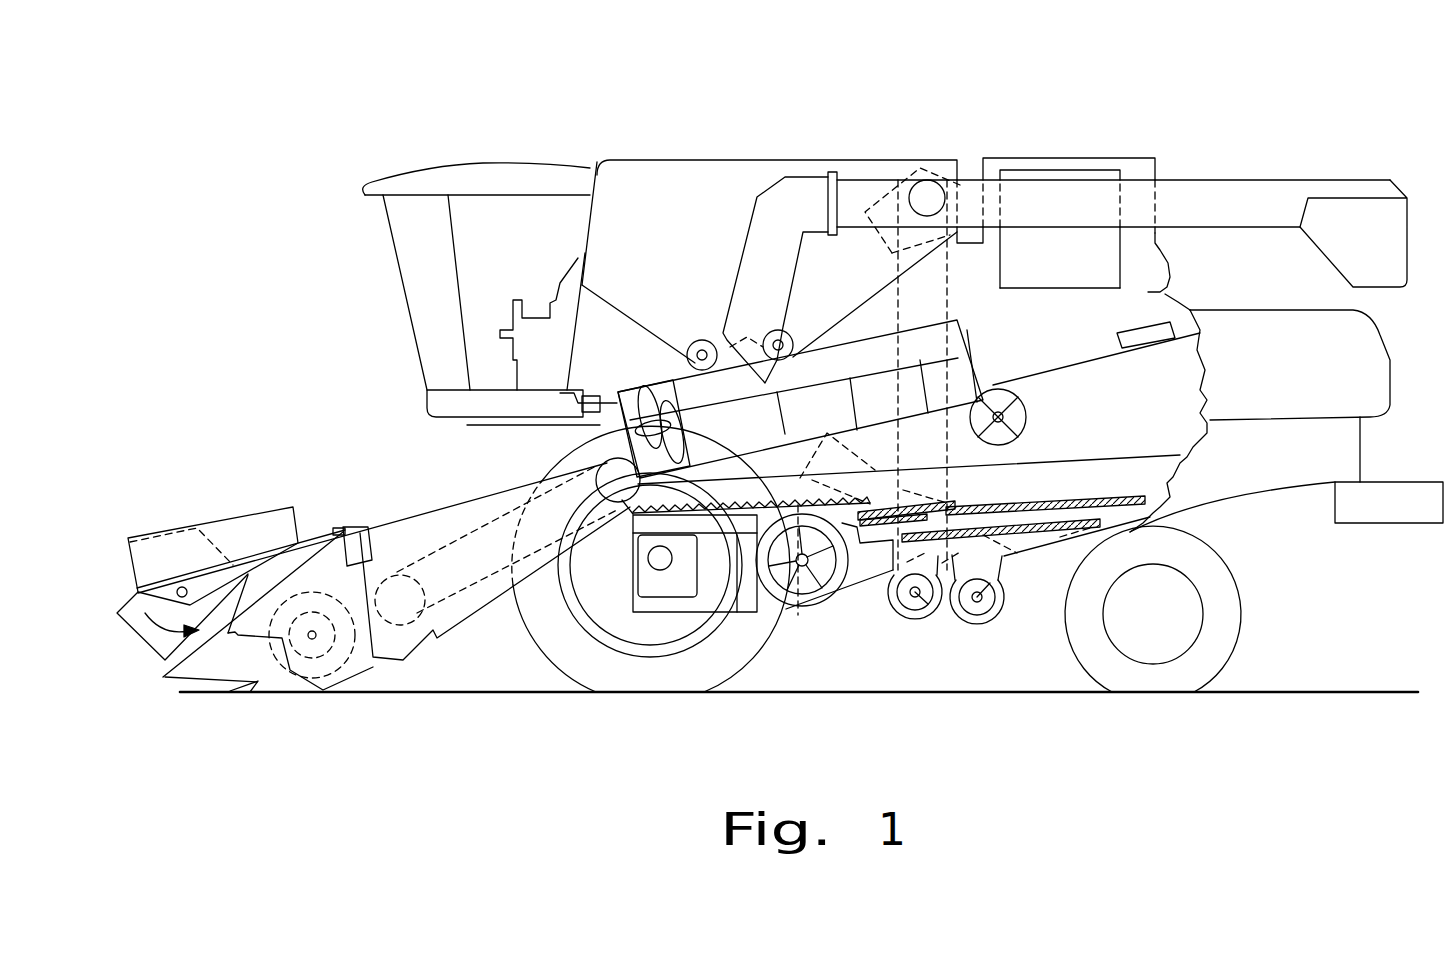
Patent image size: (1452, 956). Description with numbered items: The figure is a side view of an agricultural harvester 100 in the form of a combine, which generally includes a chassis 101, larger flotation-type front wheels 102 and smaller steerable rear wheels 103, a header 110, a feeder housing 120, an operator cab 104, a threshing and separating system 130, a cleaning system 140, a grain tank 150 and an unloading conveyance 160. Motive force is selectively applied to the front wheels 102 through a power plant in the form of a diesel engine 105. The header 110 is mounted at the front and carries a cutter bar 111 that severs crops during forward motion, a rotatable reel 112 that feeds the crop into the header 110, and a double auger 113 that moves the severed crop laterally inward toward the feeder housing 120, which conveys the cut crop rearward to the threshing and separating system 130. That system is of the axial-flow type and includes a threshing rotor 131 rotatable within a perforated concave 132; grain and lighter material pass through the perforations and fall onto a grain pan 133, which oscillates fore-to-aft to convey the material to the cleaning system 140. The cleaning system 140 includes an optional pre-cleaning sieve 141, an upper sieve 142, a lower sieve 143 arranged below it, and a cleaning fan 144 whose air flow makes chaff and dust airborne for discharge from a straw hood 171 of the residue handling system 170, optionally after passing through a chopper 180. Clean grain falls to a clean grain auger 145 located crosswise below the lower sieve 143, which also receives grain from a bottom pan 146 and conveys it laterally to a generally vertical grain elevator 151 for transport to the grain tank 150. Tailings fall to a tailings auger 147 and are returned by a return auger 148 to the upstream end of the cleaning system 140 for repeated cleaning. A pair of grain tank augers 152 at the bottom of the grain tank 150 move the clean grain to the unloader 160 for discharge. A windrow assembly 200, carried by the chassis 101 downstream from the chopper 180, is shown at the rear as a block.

The agricultural harvester 100 is at (468, 146).
The chassis 101 is at (1168, 518).
The front wheels 102 is at (557, 643).
The rear wheels 103 is at (1232, 627).
The operator cab 104 is at (402, 270).
The diesel engine 105 is at (1048, 170).
The header 110 is at (218, 503).
The cutter bar 111 is at (196, 690).
The rotatable reel 112 is at (120, 587).
The double auger 113 is at (320, 669).
The feeder housing 120 is at (444, 512).
The threshing and separating system 130 is at (563, 443).
The threshing rotor 131 is at (645, 397).
The perforated concave 132 is at (832, 375).
The grain pan 133 is at (635, 520).
The cleaning system 140 is at (861, 625).
The pre-cleaning sieve 141 is at (960, 505).
The upper sieve 142 is at (1060, 500).
The lower sieve 143 is at (1030, 533).
The cleaning fan 144 is at (806, 603).
The clean grain auger 145 is at (925, 608).
The bottom pan 146 is at (1104, 608).
The tailings auger 147 is at (975, 620).
The return auger 148 is at (895, 478).
The grain tank 150 is at (650, 165).
The grain elevator 151 is at (947, 297).
The grain tank augers 152 is at (700, 340).
The unloading conveyance 160 is at (1252, 190).
The residue handling system 170 is at (1334, 543).
The straw hood 171 is at (1372, 355).
The chopper 180 is at (1115, 341).
The windrow assembly 200 is at (1417, 474).